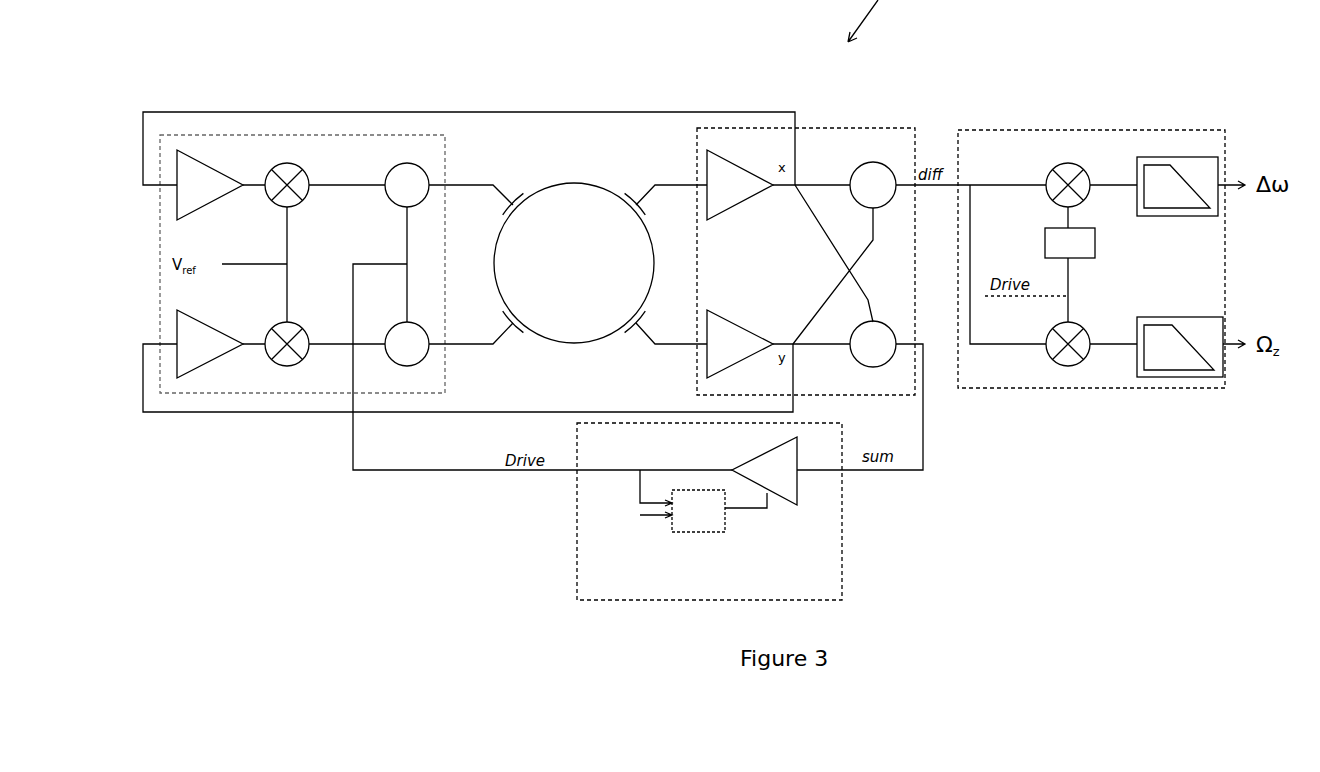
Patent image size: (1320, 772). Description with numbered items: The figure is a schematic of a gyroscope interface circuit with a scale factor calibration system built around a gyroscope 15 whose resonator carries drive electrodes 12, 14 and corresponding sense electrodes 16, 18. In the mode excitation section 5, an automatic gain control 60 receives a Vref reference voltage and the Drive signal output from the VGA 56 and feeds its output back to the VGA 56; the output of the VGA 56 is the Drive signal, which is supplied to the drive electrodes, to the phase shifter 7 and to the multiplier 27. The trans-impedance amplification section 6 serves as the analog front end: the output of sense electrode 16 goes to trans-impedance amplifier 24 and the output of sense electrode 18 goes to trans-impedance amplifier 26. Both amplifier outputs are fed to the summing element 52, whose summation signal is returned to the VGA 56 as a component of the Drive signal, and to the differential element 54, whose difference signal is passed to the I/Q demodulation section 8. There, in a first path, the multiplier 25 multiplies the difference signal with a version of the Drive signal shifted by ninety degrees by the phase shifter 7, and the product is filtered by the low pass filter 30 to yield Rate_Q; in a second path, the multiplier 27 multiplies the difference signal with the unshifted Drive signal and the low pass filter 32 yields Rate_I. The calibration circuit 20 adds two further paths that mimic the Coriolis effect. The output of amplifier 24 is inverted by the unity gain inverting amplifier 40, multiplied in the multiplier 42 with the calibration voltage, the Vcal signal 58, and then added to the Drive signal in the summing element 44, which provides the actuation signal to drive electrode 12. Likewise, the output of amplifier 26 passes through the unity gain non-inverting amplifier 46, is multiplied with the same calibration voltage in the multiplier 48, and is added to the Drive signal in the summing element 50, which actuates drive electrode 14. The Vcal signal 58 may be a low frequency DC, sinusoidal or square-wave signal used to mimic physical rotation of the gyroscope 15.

The mode excitation section 5 is at (752, 598).
The trans-impedance amplification section 6 is at (853, 128).
The phase shifter 7 is at (1095, 246).
The I/Q demodulation section 8 is at (1130, 130).
The drive electrode 12 is at (507, 190).
The drive electrode 14 is at (500, 348).
The gyroscope 15 is at (588, 183).
The sense electrode 16 is at (647, 182).
The sense electrode 18 is at (642, 326).
The calibration circuit 20 is at (345, 130).
The trans-impedance amplifier 24 is at (730, 160).
The multiplier 25 is at (1075, 150).
The trans-impedance amplifier 26 is at (695, 365).
The multiplier 27 is at (1055, 362).
The low pass filter 30 is at (1215, 130).
The low pass filter 32 is at (1225, 390).
The amplifier 40 is at (198, 145).
The multiplier 42 is at (296, 130).
The summing element 44 is at (423, 155).
The amplifier 46 is at (195, 380).
The multiplier 48 is at (287, 366).
The summing element 50 is at (407, 413).
The summing element 52 is at (893, 360).
The differential element 54 is at (893, 160).
The VGA 56 is at (800, 480).
The Vcal signal 58 is at (469, 169).
The automatic gain control 60 is at (702, 535).